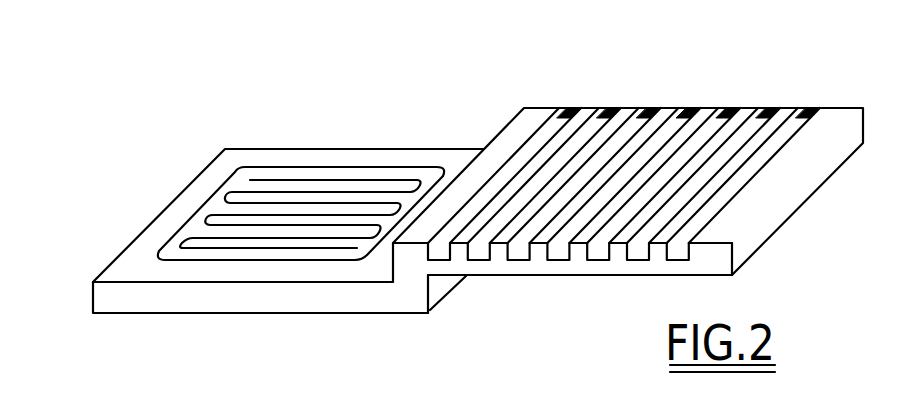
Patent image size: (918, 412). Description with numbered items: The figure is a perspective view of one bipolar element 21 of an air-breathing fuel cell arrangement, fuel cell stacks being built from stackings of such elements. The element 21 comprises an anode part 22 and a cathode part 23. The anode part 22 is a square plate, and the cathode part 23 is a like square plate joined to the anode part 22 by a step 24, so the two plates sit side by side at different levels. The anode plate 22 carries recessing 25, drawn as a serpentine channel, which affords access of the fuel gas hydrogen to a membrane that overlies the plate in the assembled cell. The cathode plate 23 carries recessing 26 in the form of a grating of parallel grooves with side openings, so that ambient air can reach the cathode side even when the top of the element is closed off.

The bipolar element 21 is at (387, 302).
The anode part 22 is at (210, 302).
The cathode part 23 is at (845, 108).
The step 24 is at (412, 276).
The recessing 25 is at (328, 183).
The recessing 26 is at (727, 108).